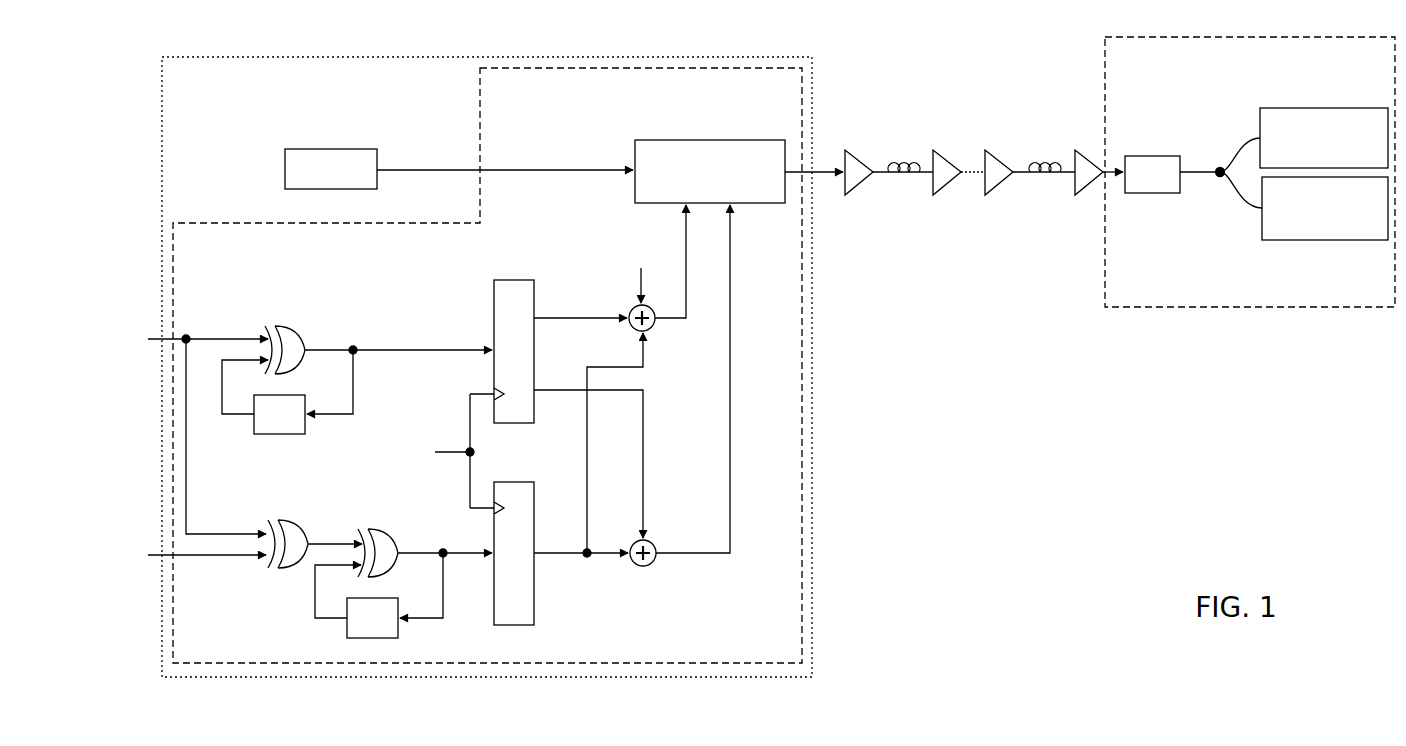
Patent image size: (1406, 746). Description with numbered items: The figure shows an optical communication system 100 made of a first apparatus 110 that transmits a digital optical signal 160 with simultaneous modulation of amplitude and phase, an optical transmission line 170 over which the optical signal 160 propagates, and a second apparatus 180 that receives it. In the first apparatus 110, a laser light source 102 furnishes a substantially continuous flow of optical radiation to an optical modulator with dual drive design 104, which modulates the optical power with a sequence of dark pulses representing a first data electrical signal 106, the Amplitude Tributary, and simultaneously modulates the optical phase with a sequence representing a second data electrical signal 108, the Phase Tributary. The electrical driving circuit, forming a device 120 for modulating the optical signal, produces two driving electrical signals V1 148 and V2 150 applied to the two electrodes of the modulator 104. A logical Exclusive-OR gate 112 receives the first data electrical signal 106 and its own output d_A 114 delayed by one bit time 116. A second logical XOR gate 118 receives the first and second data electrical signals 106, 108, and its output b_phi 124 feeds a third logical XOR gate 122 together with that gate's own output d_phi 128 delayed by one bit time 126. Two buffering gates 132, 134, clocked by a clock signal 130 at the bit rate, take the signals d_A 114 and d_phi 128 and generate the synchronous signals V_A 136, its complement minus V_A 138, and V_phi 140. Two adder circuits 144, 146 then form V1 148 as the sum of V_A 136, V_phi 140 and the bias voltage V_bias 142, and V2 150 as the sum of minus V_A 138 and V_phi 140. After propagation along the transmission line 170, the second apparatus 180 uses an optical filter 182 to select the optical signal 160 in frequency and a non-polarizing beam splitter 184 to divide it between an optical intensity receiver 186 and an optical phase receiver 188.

The optical communication system 100 is at (363, 34).
The laser light source 102 is at (313, 149).
The optical modulator with dual drive design 104 is at (706, 140).
The first data electrical signal NRZ_A 106 is at (128, 332).
The second data electrical signal NRZ_phi 108 is at (128, 544).
The first apparatus 110 is at (162, 178).
The logical Exclusive-OR gate 112 is at (283, 328).
The signal d_A 114 is at (335, 320).
The one bit time delay 116 is at (254, 430).
The second logical XOR gate 118 is at (283, 570).
The device for modulating a digital optical signal 120 is at (233, 222).
The third logical XOR gate 122 is at (372, 530).
The signal b_phi 124 is at (322, 514).
The one bit time delay 126 is at (398, 638).
The signal d_phi 128 is at (432, 524).
The clock signal 130 is at (410, 442).
The buffering gate 132 is at (494, 285).
The buffering gate 134 is at (534, 622).
The signal V_A 136 is at (553, 292).
The complement signal -V_A 138 is at (560, 364).
The signal V_phi 140 is at (578, 580).
The bias voltage V_bias 142 is at (608, 273).
The adder circuit 144 is at (656, 328).
The adder circuit 146 is at (656, 564).
The driving electrical signal V_1 148 is at (632, 220).
The driving electrical signal V_2 150 is at (757, 242).
The digital optical signal 160 is at (822, 174).
The optical transmission line 170 is at (960, 132).
The second apparatus 180 is at (1160, 307).
The optical filter 182 is at (1148, 156).
The non-polarizing beam splitter 184 is at (1218, 168).
The optical intensity receiver 186 is at (1325, 108).
The optical phase receiver 188 is at (1325, 240).